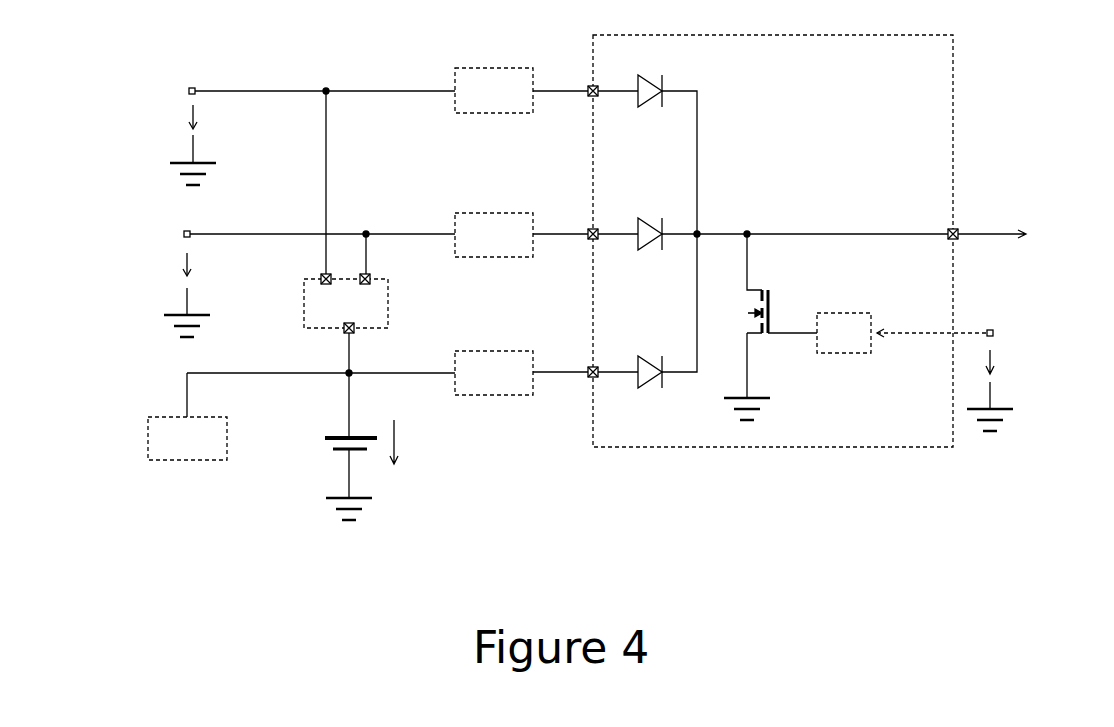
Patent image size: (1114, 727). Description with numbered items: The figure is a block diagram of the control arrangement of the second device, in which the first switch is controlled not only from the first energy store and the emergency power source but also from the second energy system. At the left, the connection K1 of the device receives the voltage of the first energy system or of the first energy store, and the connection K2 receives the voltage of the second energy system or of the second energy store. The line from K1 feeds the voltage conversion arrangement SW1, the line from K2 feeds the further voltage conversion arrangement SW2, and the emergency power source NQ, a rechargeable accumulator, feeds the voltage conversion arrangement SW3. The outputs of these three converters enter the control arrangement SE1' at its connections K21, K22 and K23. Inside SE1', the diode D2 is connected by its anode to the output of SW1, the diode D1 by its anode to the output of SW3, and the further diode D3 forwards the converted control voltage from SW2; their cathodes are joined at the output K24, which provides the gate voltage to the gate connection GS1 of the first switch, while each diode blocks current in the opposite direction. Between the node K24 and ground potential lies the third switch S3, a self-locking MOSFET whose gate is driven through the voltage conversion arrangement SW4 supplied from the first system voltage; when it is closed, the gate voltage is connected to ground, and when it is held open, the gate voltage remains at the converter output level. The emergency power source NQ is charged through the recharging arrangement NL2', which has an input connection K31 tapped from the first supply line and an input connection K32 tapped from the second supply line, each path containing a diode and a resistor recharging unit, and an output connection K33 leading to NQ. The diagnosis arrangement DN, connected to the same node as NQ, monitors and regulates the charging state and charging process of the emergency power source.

The connection of the device K1 is at (266, 133).
The connection of the device K2 is at (264, 282).
The signal input of the control arrangement K21 is at (576, 83).
The connection of the control arrangement K22 is at (576, 226).
The signal input of the control arrangement K23 is at (576, 364).
The output of the control arrangement K24 is at (971, 224).
The input connection of the recharging arrangement K31 is at (309, 272).
The input connection of the recharging arrangement K32 is at (383, 272).
The output connection of the recharging arrangement K33 is at (332, 337).
The voltage conversion arrangement SW1 is at (494, 90).
The voltage conversion arrangement SW2 is at (494, 235).
The voltage conversion arrangement SW3 is at (494, 373).
The voltage conversion arrangement SW4 is at (961, 372).
The diode D1 is at (650, 385).
The diode D2 is at (650, 103).
The diode D3 is at (650, 246).
The third switch S3 is at (770, 327).
The recharging arrangement NL2' is at (346, 303).
The emergency power source NQ is at (378, 446).
The diagnosis arrangement DN is at (187, 438).
The control arrangement SE1' is at (773, 241).
The gate connection of the first switch GS1 is at (1014, 234).